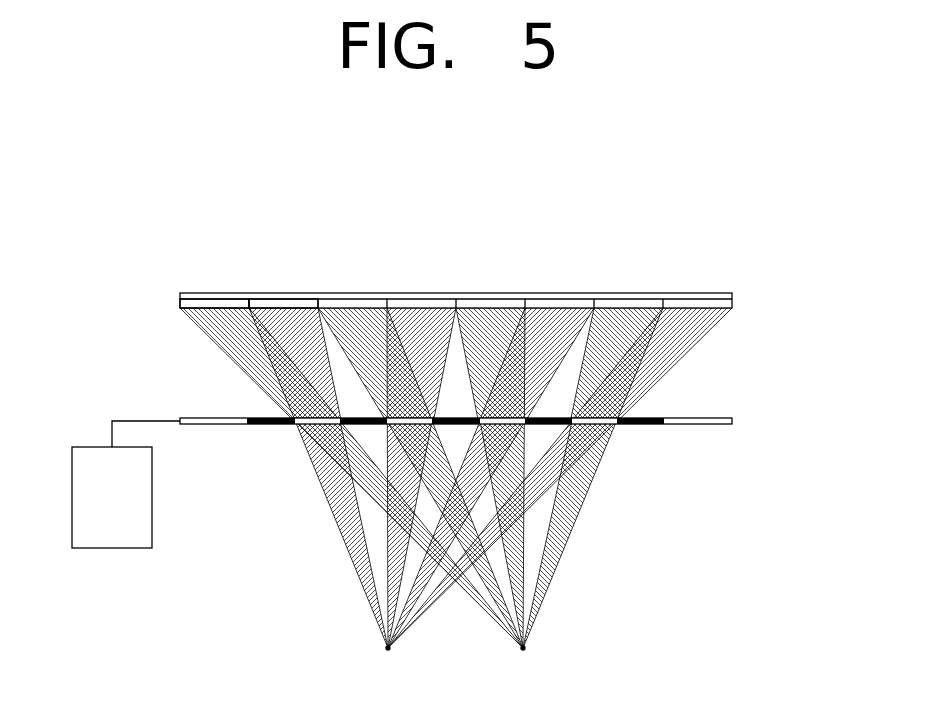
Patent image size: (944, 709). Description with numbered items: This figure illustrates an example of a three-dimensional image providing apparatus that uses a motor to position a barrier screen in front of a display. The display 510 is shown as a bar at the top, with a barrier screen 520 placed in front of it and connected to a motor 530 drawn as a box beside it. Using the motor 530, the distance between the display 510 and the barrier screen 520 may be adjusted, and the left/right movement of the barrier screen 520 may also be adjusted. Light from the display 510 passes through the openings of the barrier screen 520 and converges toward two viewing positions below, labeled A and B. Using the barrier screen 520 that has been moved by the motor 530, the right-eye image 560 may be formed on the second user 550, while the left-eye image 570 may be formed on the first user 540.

The display 510 is at (720, 288).
The barrier screen 520 is at (720, 415).
The motor 530 is at (152, 495).
The first user 540 is at (374, 663).
The second user 550 is at (535, 663).
The right-eye image 560 is at (218, 262).
The left-eye image 570 is at (287, 262).